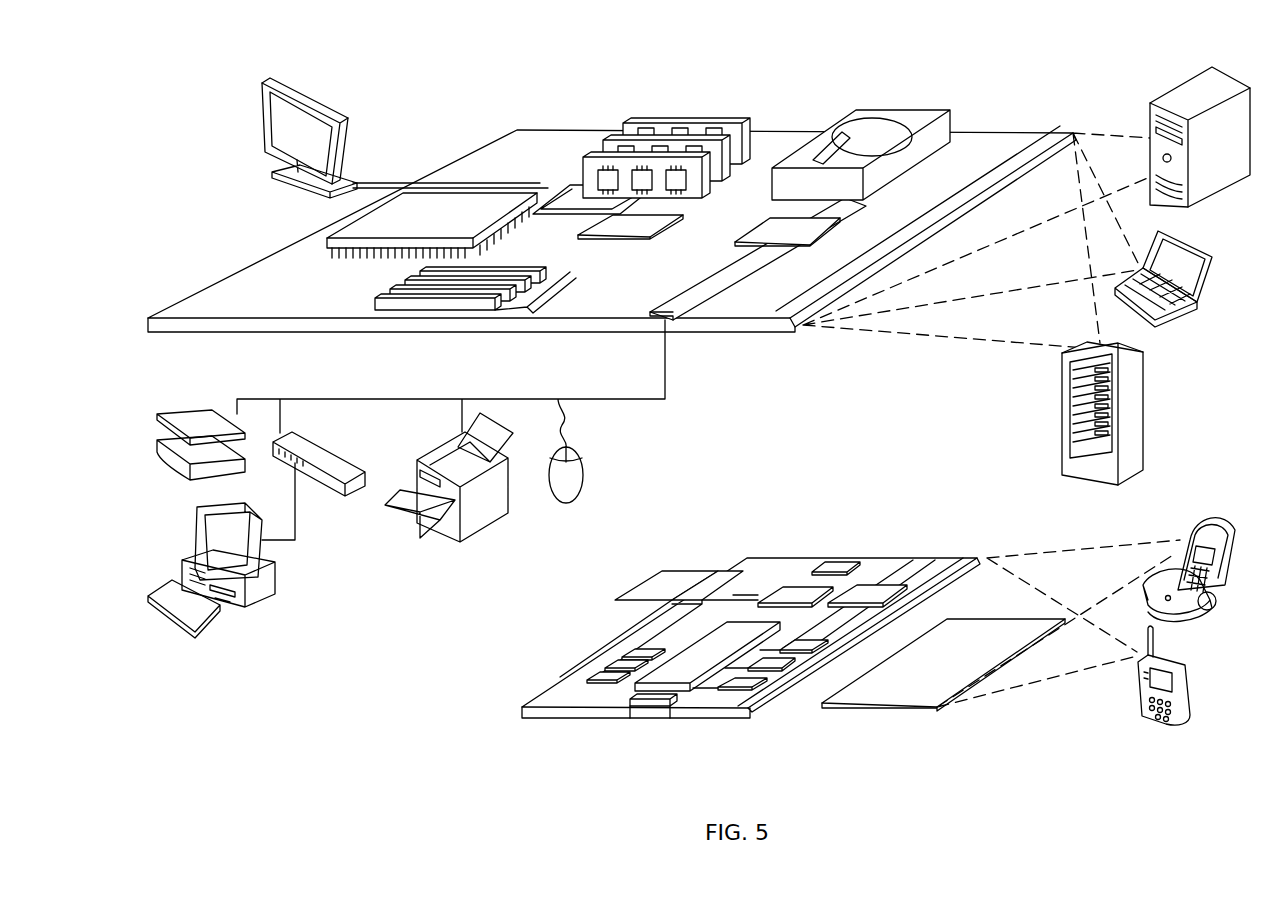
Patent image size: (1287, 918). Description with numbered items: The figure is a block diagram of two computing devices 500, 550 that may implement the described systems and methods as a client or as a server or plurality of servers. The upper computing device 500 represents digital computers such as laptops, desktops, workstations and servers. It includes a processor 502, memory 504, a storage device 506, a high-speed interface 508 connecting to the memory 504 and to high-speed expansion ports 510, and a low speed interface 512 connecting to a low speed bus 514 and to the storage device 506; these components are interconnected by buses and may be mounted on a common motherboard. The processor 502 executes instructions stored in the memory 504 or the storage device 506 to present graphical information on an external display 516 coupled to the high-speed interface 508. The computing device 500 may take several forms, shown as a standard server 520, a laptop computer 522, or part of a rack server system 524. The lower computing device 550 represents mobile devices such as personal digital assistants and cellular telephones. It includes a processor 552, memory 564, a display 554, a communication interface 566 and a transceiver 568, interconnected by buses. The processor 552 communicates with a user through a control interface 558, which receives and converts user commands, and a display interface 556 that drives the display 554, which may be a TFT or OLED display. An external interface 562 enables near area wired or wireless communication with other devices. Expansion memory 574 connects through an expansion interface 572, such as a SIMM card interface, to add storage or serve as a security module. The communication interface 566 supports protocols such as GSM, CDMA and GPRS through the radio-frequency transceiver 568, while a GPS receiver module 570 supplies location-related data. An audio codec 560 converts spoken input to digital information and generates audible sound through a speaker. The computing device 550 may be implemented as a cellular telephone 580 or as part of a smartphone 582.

The computing device 500 is at (447, 104).
The processor 502 is at (330, 240).
The memory 504 is at (653, 124).
The storage device 506 is at (854, 112).
The high-speed interface 508 is at (560, 205).
The high-speed expansion ports 510 is at (390, 293).
The low speed interface 512 is at (768, 226).
The low speed bus 514 is at (673, 320).
The display 516 is at (262, 82).
The standard server 520 is at (1150, 118).
The laptop computer 522 is at (1212, 256).
The rack server system 524 is at (1062, 436).
The computing device 550 is at (496, 719).
The processor 552 is at (684, 678).
The display 554 is at (905, 690).
The display interface 556 is at (745, 688).
The control interface 558 is at (777, 668).
The audio codec 560 is at (805, 648).
The external interface 562 is at (652, 706).
The memory 564 is at (600, 672).
The communication interface 566 is at (797, 597).
The transceiver 568 is at (868, 592).
The GPS receiver module 570 is at (846, 567).
The expansion interface 572 is at (733, 566).
The expansion memory 574 is at (662, 571).
The cellular telephone 580 is at (1193, 520).
The smartphone 582 is at (1140, 686).